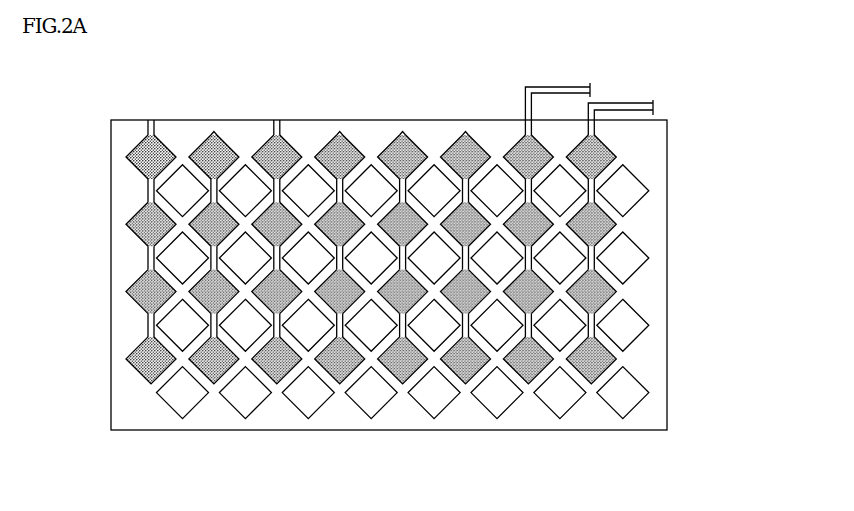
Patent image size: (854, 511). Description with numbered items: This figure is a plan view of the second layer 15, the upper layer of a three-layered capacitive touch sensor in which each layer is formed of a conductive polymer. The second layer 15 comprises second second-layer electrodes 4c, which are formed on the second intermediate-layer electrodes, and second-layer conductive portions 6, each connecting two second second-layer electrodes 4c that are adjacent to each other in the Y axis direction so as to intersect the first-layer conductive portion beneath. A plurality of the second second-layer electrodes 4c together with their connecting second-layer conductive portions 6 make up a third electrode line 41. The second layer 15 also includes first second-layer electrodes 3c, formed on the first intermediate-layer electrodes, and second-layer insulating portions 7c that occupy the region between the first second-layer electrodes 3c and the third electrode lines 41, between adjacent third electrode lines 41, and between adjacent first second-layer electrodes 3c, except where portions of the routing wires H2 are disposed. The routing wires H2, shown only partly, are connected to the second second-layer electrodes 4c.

The second layer 15 is at (668, 168).
The first second-layer electrode 3c is at (385, 180).
The second second-layer electrode 4c is at (523, 140).
The second-layer conductive portion 6 is at (377, 187).
The second-layer insulating portion 7c is at (247, 142).
The third electrode line 41 is at (150, 117).
The routing wire H2 is at (628, 103).